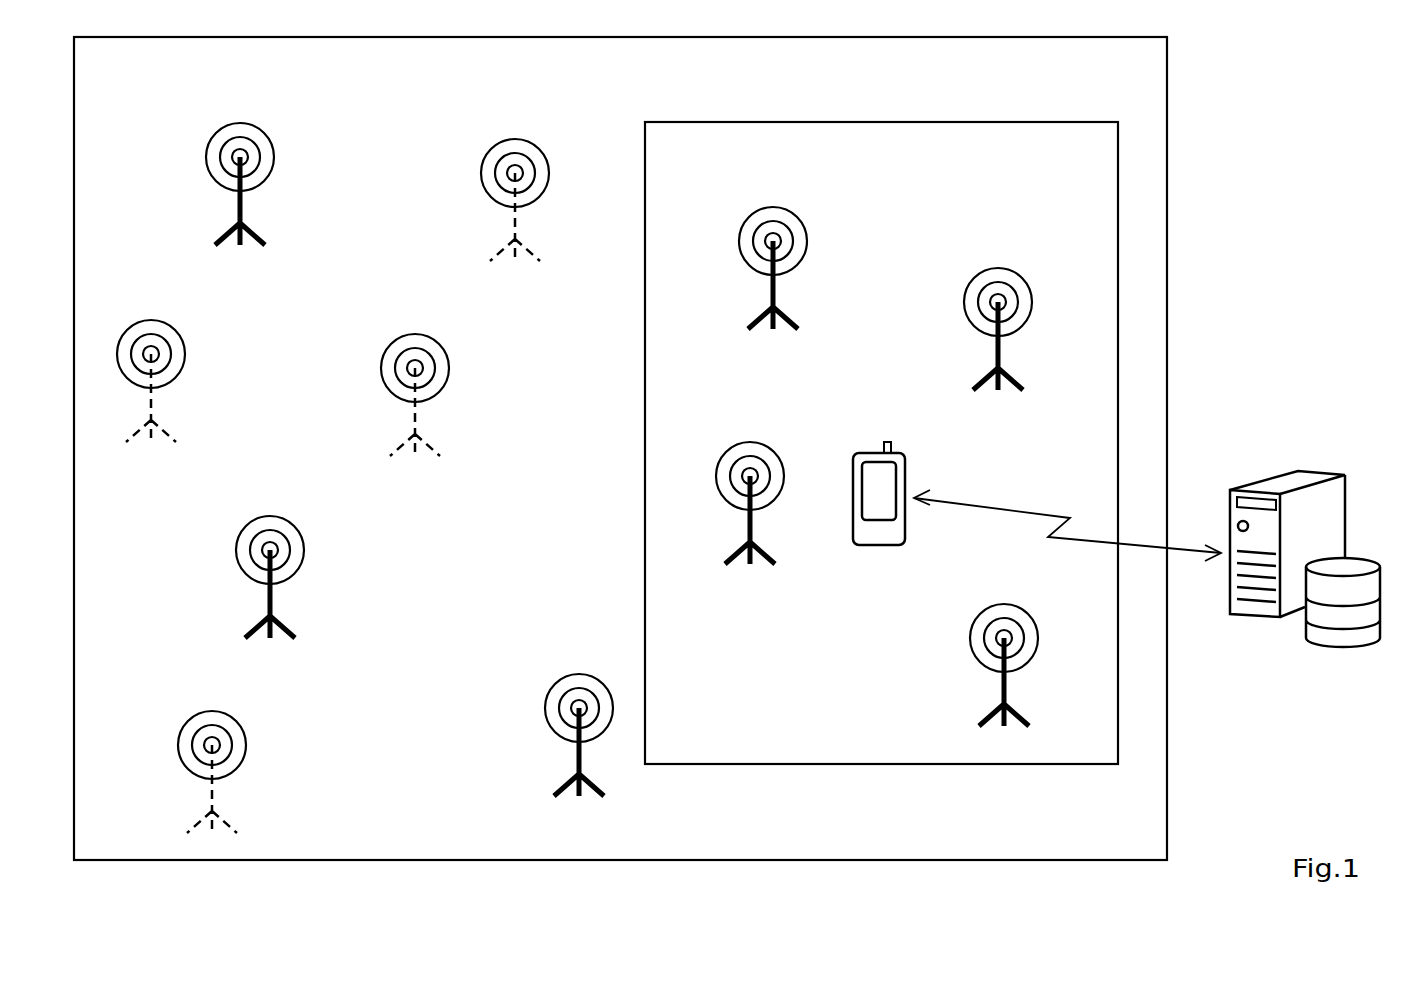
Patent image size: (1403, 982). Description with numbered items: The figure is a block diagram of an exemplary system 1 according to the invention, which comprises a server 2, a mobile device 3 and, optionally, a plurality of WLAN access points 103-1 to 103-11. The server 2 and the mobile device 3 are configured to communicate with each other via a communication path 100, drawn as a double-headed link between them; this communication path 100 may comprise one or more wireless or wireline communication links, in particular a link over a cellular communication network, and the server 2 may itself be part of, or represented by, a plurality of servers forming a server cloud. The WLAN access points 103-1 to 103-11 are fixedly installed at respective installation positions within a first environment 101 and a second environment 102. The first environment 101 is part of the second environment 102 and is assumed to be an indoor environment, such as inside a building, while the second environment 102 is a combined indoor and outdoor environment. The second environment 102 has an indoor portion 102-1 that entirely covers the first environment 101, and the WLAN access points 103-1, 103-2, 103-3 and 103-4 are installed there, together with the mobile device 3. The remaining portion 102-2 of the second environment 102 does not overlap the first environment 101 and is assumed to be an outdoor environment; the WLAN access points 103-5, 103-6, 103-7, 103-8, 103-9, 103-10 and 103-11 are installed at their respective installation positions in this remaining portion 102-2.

The system 1 is at (1280, 160).
The server 2 is at (1250, 617).
The mobile device 3 is at (866, 545).
The communication path 100 is at (1027, 510).
The first environment 101 is at (1118, 357).
The second environment 102 is at (1167, 249).
The portion of the second environment 102-1 is at (839, 697).
The remaining portion of the second environment 102-2 is at (423, 801).
The WLAN access point 103-1 is at (765, 208).
The WLAN access point 103-2 is at (990, 269).
The WLAN access point 103-3 is at (742, 443).
The WLAN access point 103-4 is at (995, 605).
The WLAN access point 103-5 is at (570, 675).
The WLAN access point 103-6 is at (204, 712).
The WLAN access point 103-7 is at (262, 517).
The WLAN access point 103-8 is at (407, 335).
The WLAN access point 103-9 is at (142, 321).
The WLAN access point 103-10 is at (507, 141).
The WLAN access point 103-11 is at (232, 124).